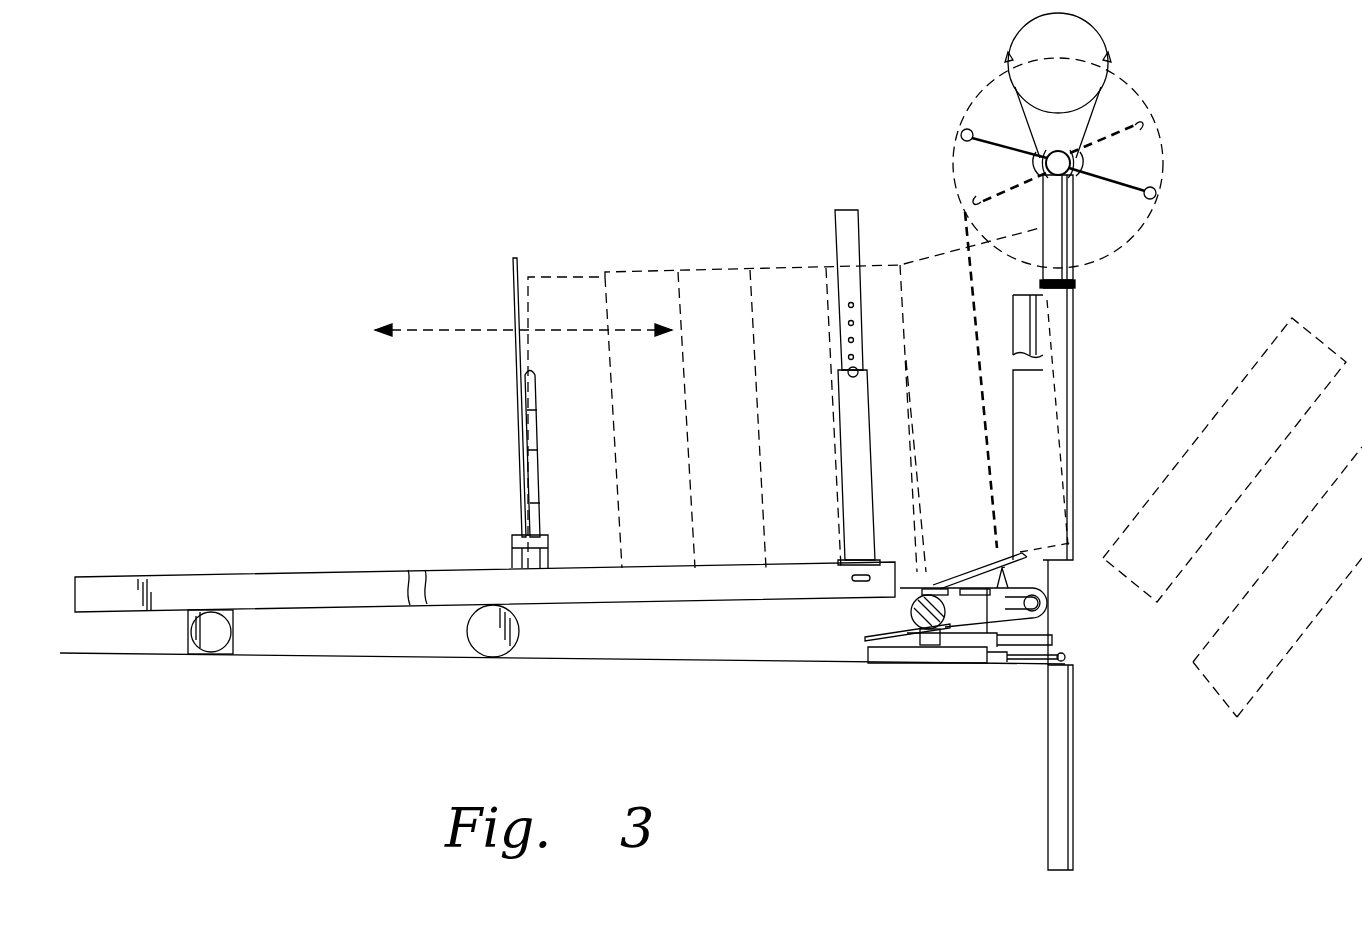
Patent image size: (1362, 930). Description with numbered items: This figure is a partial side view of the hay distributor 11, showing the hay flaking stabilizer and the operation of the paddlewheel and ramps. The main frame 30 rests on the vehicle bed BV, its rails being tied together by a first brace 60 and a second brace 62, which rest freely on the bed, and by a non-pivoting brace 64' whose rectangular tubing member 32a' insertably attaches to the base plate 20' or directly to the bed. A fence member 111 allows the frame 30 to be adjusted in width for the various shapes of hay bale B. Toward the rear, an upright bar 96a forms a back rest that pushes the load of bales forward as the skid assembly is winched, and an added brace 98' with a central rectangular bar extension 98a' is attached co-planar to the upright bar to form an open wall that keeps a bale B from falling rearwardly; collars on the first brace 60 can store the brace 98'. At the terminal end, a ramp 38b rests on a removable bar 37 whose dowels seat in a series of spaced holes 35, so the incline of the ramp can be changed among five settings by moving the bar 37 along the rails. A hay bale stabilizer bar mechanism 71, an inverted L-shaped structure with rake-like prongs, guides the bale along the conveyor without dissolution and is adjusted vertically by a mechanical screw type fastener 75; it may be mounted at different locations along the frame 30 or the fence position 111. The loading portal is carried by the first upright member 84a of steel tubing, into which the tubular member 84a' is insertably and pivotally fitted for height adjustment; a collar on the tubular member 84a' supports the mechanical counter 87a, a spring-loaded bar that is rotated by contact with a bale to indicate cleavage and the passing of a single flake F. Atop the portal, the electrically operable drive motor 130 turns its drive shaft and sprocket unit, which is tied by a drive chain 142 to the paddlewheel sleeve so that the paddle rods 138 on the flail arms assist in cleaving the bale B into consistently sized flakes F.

The hay distributor 11 is at (296, 146).
The main frame 30 is at (138, 556).
The fence member 111 is at (312, 585).
The first brace 60 is at (212, 657).
The second brace 62 is at (494, 657).
The added brace 98' is at (496, 391).
The central rectangular bar extension 98a' is at (498, 447).
The upright bar 96a is at (528, 432).
The hay bale B is at (665, 272).
The vehicle bed BV is at (694, 670).
The hay bale stabilizer bar mechanism 71 is at (843, 212).
The mechanical screw type fastener 75 is at (860, 590).
The drive motor 130 is at (1023, 78).
The paddle rods 138 is at (1130, 177).
The drive chain 142 is at (1088, 152).
The tubular member 84a' is at (1133, 227).
The mechanical counter 87a is at (1092, 284).
The first upright member 84a is at (1075, 579).
The base plate 20' is at (926, 604).
The non-pivoting brace 64' is at (939, 658).
The rectangular tubing member 32a' is at (907, 662).
The removable bar 37 is at (995, 568).
The ramp 38b is at (935, 576).
The spaced holes 35 is at (988, 572).
The flake F is at (1266, 364).